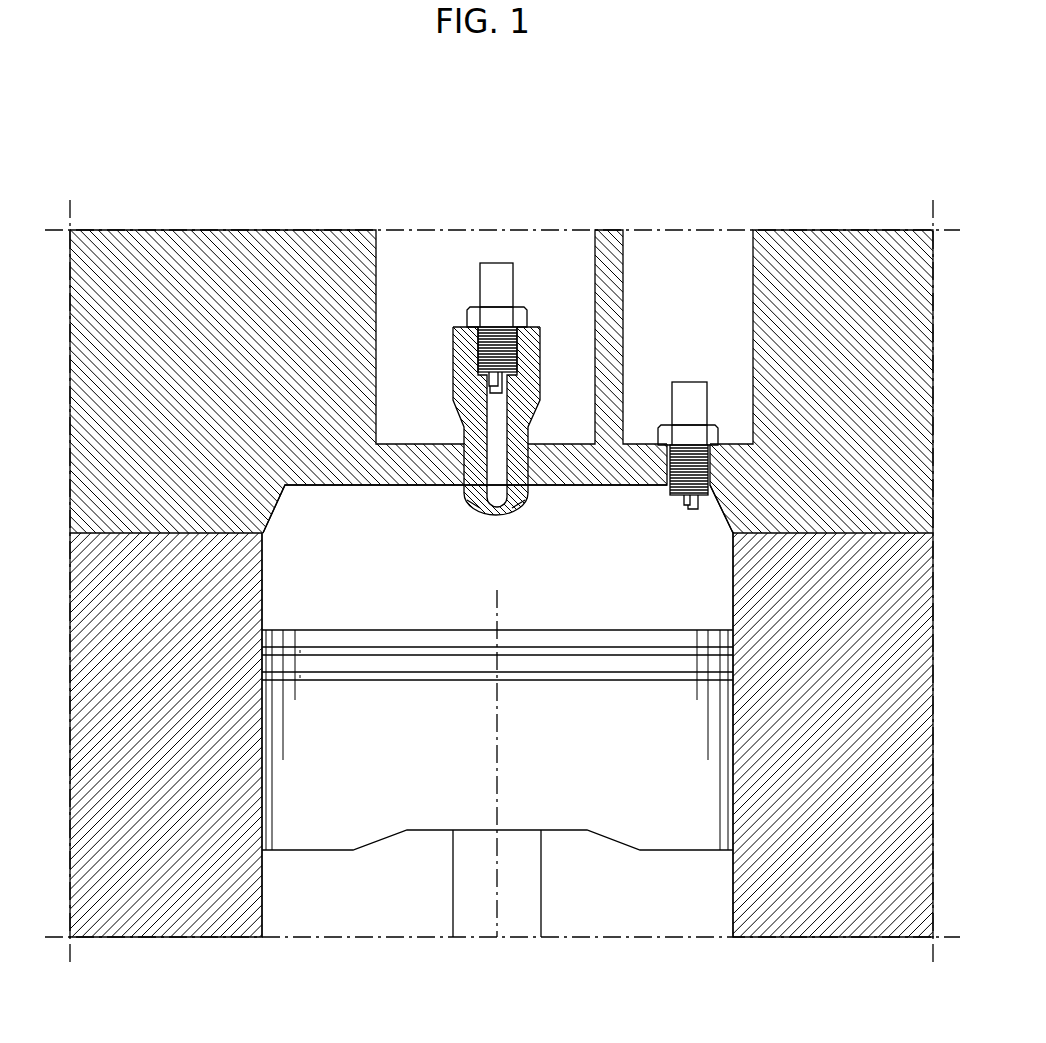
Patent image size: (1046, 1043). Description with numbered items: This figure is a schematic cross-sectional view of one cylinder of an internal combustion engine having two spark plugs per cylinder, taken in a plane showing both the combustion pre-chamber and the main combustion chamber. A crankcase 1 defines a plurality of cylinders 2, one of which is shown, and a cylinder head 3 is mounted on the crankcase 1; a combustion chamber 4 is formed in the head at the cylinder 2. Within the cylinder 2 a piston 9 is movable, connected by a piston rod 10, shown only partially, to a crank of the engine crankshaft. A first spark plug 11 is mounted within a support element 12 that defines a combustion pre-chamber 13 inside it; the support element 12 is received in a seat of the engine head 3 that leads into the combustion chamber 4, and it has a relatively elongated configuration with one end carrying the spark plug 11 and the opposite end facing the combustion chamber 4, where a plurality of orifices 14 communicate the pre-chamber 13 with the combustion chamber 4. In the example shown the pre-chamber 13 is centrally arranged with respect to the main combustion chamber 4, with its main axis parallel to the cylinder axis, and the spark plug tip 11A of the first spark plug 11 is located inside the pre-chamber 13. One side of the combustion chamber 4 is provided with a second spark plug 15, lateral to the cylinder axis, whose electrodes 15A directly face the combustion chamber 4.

The crankcase 1 is at (153, 900).
The cylinder 2 is at (730, 908).
The cylinder head 3 is at (828, 262).
The combustion chamber 4 is at (281, 512).
The piston 9 is at (345, 853).
The piston rod 10 is at (540, 883).
The first spark plug 11 is at (487, 258).
The injection hole 11A is at (493, 394).
The support element 12 is at (450, 351).
The combustion pre-chamber 13 is at (493, 452).
The orifices 14 is at (522, 502).
The second spark plug 15 is at (667, 390).
The electrodes 15A is at (686, 502).